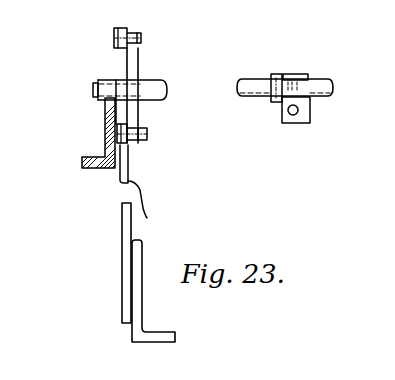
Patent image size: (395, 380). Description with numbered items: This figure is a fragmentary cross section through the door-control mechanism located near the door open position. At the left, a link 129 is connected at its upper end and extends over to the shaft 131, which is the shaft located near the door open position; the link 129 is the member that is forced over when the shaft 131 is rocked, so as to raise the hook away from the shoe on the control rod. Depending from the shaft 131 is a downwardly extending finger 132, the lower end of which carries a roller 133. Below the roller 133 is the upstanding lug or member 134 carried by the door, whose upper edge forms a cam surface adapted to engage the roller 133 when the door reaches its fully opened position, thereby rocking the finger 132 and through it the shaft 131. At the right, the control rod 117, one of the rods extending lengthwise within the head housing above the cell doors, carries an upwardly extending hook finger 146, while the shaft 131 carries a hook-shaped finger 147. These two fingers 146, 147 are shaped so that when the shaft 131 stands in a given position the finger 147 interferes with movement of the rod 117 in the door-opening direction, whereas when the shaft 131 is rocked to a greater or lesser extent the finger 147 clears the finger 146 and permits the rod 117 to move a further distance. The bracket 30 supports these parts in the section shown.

The angle bracket 30 is at (142, 312).
The control rod 117 is at (293, 115).
The link 129 is at (113, 37).
The shaft 131 is at (237, 91).
The downwardly depending finger 132 is at (142, 110).
The roller 133 is at (117, 132).
The upstanding lug 134 is at (128, 225).
The hook finger 146 is at (310, 103).
The hook-shaped finger 147 is at (275, 74).